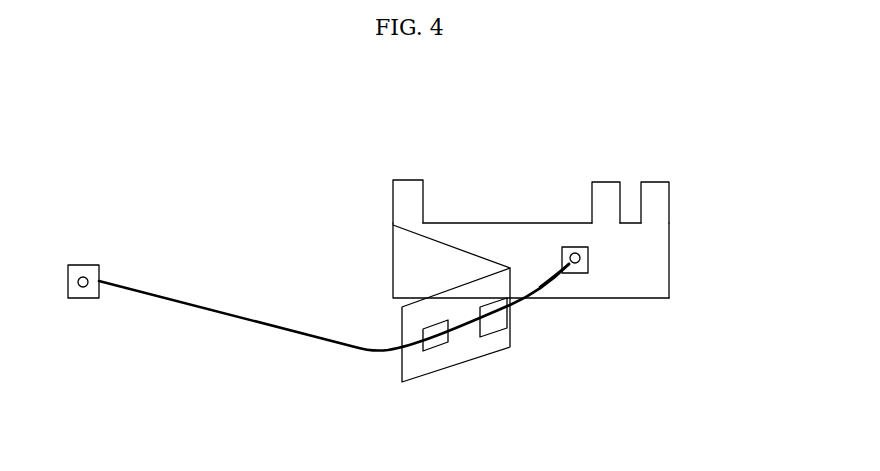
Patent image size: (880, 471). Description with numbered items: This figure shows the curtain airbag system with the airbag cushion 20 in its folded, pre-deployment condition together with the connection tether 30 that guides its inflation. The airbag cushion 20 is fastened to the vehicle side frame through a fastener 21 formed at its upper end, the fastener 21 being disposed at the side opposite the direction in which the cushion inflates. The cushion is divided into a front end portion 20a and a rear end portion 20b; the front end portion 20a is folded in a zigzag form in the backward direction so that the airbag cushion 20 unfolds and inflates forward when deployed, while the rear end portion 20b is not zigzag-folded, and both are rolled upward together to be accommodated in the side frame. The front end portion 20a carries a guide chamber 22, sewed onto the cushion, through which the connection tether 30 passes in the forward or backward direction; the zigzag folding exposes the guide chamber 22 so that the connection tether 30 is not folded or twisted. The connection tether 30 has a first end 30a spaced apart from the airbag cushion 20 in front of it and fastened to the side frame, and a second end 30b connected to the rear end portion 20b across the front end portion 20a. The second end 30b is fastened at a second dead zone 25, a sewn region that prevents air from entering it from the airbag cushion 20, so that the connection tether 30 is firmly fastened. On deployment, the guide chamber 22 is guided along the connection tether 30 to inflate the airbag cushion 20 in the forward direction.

The airbag cushion 20 is at (505, 176).
The fastener 21 is at (406, 179).
The guide chamber 22 is at (440, 345).
The second dead zone 25 is at (575, 250).
The front end portion 20a is at (422, 367).
The rear end portion 20b is at (657, 263).
The connection tether 30 is at (277, 332).
The first end 30a is at (170, 302).
The second end 30b is at (552, 283).